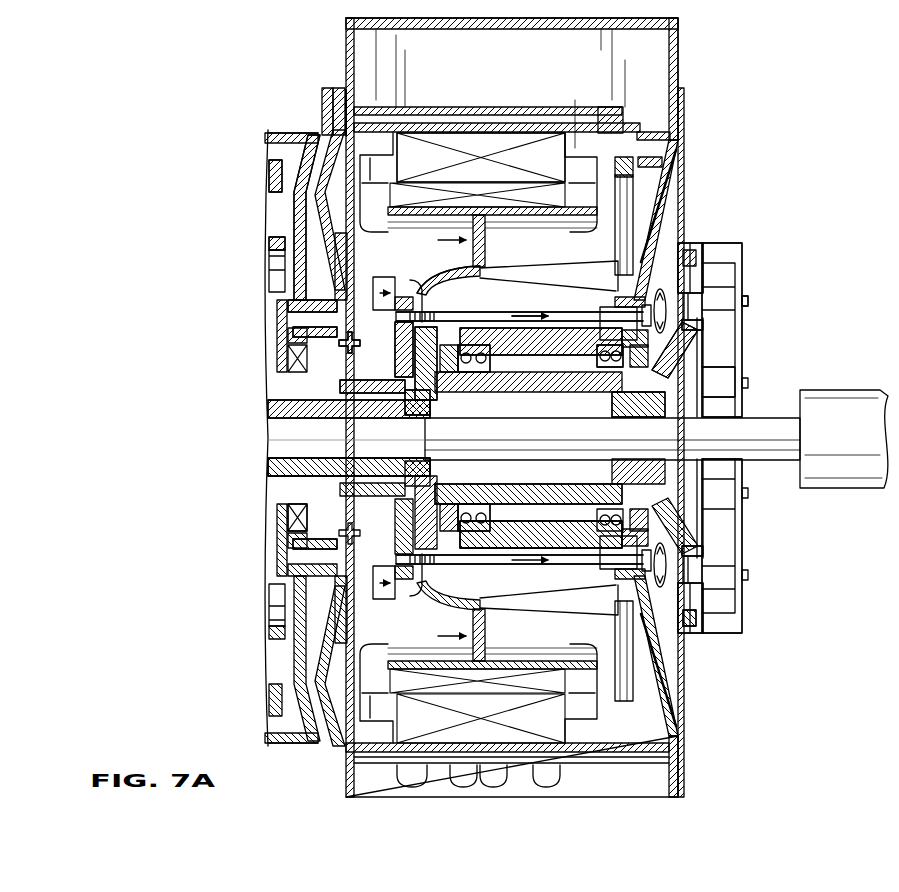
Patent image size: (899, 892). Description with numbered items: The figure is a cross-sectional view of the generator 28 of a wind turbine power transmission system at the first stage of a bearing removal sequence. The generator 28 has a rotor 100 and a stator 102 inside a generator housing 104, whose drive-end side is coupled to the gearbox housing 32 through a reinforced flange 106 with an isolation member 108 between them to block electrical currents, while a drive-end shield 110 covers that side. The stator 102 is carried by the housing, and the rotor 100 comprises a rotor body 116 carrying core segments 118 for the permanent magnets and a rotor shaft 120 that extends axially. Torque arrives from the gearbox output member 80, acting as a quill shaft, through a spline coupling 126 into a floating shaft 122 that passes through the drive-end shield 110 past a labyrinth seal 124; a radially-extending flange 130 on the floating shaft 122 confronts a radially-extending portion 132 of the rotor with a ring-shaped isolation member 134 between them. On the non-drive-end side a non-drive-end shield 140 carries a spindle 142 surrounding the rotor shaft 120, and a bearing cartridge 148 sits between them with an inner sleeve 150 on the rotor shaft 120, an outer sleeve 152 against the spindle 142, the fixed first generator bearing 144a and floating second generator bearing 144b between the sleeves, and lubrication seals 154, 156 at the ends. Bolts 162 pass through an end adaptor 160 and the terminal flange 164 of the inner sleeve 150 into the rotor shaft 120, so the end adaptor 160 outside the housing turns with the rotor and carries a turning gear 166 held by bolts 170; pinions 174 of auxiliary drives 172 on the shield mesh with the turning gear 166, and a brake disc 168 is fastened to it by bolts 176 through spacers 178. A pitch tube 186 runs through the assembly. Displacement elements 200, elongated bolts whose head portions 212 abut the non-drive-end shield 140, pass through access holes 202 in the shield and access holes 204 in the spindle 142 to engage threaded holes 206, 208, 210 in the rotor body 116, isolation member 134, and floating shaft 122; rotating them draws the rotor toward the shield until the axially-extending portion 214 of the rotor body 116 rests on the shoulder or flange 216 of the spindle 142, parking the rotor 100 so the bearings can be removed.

The generator 28 is at (680, 40).
The gearbox housing 32 is at (270, 129).
The gearbox output member 80 is at (280, 408).
The rotor 100 is at (384, 200).
The stator 102 is at (574, 146).
The generator housing 104 is at (652, 18).
The reinforced flange 106 is at (322, 92).
The isolation member 108 is at (340, 90).
The drive-end shield 110 is at (346, 97).
The rotor body 116 is at (488, 252).
The core segments 118 is at (440, 188).
The rotor shaft 120 is at (510, 396).
The floating shaft 122 is at (296, 250).
The labyrinth seal 124 is at (380, 390).
The spline coupling 126 is at (360, 417).
The radially-extending flange 130 is at (300, 372).
The radially-extending portion 132 is at (380, 515).
The isolation member 134 is at (340, 543).
The non-drive-end shield 140 is at (686, 142).
The spindle 142 is at (506, 548).
The first generator bearing 144a is at (456, 374).
The second generator bearing 144b is at (610, 370).
The bearing cartridge 148 is at (560, 516).
The inner sleeve 150 is at (496, 492).
The outer sleeve 152 is at (527, 522).
The lubrication seal 154 is at (400, 395).
The lubrication seal 156 is at (695, 346).
The end adaptor 160 is at (700, 356).
The bolts 162 is at (700, 384).
The terminal flange 164 is at (664, 412).
The turning gear 166 is at (688, 247).
The brake disc 168 is at (744, 523).
The bolts 170 is at (700, 548).
The auxiliary drives 172 is at (742, 633).
The pinions 174 is at (690, 634).
The bolts 176 is at (749, 300).
The spacers 178 is at (714, 292).
The pitch tube 186 is at (778, 460).
The displacement elements 200 is at (565, 325).
The access holes 202 is at (608, 314).
The access holes 204 is at (430, 410).
The threaded hole 206 is at (411, 304).
The threaded hole 208 is at (320, 328).
The threaded hole 210 is at (305, 302).
The head portion 212 is at (684, 222).
The axially-extending portion 214 is at (450, 265).
The shoulder or flange 216 is at (482, 284).